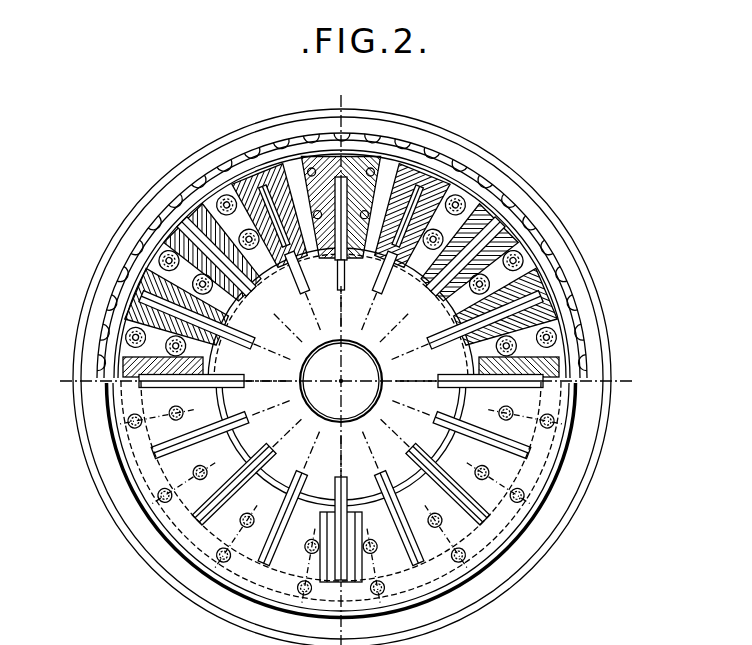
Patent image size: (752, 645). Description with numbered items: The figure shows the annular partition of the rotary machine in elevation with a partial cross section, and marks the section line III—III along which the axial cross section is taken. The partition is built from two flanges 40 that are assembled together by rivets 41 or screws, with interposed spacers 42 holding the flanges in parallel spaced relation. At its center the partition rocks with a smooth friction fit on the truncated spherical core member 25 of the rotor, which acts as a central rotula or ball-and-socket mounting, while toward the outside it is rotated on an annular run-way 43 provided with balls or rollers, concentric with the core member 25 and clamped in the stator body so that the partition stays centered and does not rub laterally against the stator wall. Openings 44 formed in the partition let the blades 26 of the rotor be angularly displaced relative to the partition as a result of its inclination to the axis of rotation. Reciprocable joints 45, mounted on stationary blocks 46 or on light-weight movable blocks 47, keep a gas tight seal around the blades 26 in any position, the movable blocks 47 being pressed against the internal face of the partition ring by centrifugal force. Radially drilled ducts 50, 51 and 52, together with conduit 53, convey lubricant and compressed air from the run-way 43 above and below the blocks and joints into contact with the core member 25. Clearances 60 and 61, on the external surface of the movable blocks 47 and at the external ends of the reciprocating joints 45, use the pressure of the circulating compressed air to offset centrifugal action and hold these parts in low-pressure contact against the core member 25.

The truncated spherical core member 25 is at (252, 442).
The blades 26 is at (282, 290).
The flanges 40 is at (544, 452).
The rivets 41 is at (521, 267).
The spacers 42 is at (483, 197).
The annular run-way 43 is at (466, 160).
The openings 44 is at (500, 512).
The reciprocable joints 45 is at (424, 155).
The stationary blocks 46 is at (323, 165).
The movable blocks 47 is at (238, 185).
The radially drilled duct 50 is at (230, 198).
The radially drilled duct 51 is at (187, 222).
The radially drilled duct 52 is at (143, 295).
The conduit 53 is at (118, 366).
The clearance 60 is at (499, 213).
The clearance 61 is at (548, 291).
The section line III— III is at (603, 330).